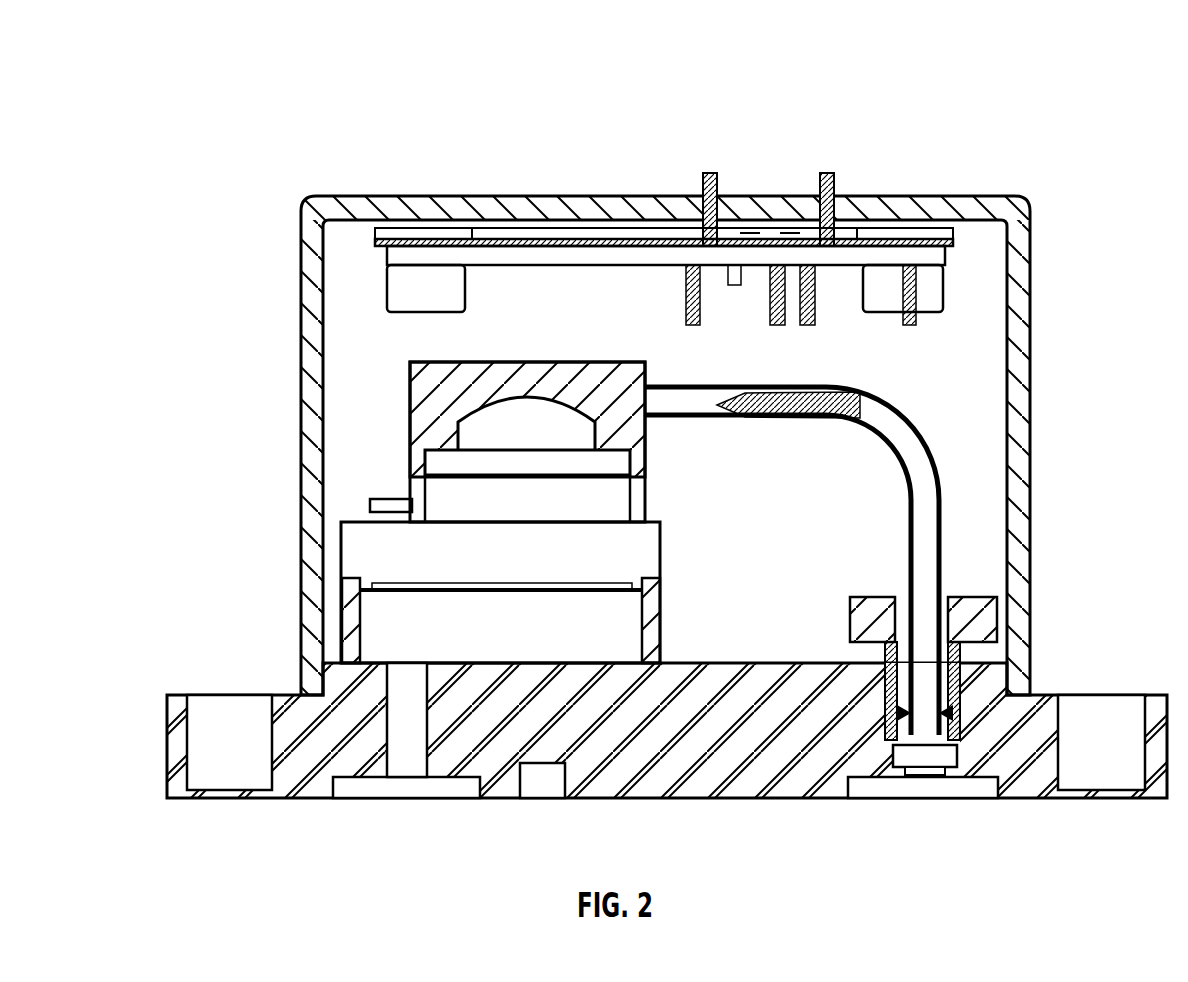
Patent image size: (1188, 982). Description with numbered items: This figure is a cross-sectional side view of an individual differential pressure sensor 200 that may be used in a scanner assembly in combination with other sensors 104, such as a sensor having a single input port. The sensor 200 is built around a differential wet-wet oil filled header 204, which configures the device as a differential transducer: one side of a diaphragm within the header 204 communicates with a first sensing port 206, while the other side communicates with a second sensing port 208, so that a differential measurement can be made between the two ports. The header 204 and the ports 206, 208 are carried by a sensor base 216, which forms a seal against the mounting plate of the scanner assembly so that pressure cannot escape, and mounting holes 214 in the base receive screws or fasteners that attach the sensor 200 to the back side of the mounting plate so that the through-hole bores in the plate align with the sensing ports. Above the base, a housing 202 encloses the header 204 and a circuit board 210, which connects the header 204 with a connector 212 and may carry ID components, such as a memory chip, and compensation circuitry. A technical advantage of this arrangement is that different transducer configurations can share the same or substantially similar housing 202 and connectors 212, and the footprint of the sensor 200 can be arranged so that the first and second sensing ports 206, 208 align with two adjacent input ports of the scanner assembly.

The differential pressure sensor 200 is at (650, 436).
The housing 202 is at (1018, 288).
The differential wet-wet oil filled header 204 is at (457, 557).
The first sensing port 206 is at (403, 790).
The second sensing port 208 is at (904, 810).
The circuit board 210 is at (603, 238).
The connector 212 is at (788, 178).
The mounting holes 214 is at (228, 705).
The sensor base 216 is at (639, 738).
The sensors 104 is at (744, 445).